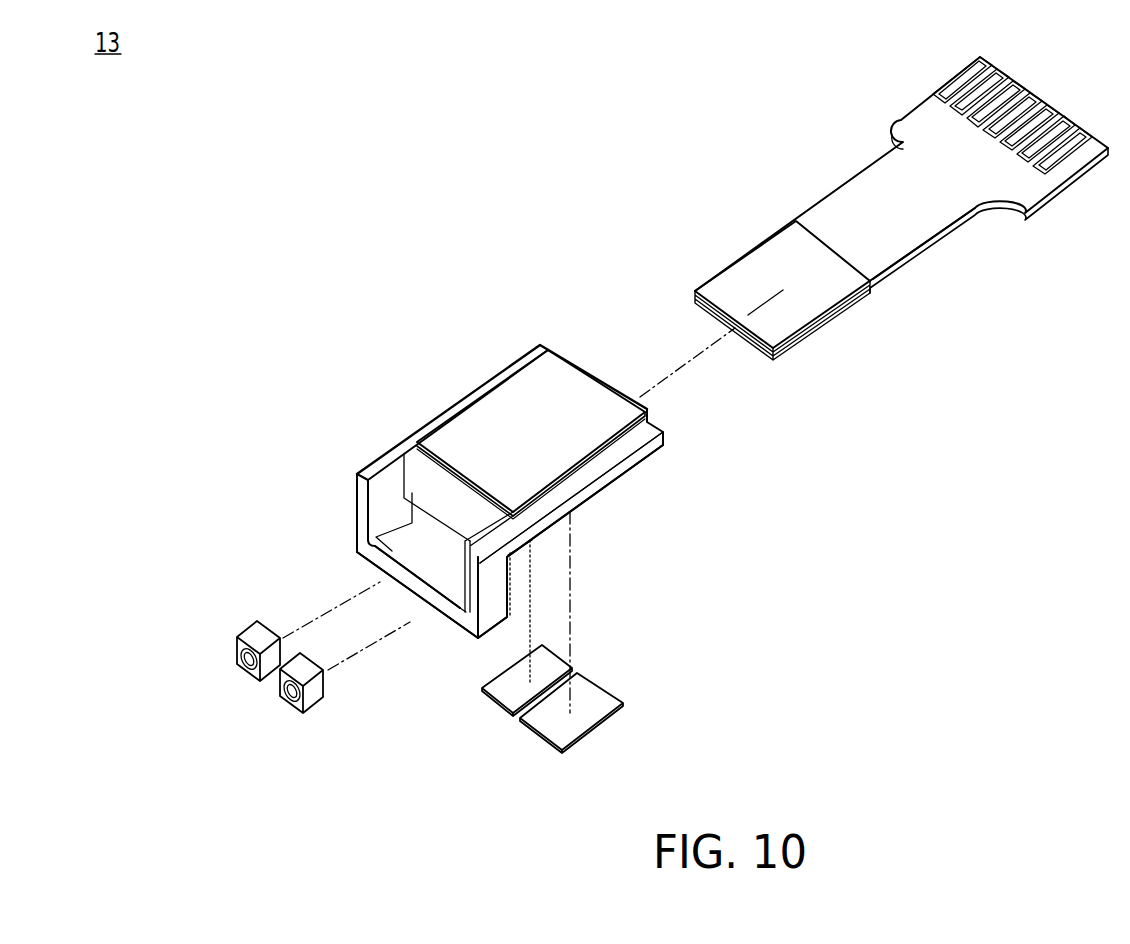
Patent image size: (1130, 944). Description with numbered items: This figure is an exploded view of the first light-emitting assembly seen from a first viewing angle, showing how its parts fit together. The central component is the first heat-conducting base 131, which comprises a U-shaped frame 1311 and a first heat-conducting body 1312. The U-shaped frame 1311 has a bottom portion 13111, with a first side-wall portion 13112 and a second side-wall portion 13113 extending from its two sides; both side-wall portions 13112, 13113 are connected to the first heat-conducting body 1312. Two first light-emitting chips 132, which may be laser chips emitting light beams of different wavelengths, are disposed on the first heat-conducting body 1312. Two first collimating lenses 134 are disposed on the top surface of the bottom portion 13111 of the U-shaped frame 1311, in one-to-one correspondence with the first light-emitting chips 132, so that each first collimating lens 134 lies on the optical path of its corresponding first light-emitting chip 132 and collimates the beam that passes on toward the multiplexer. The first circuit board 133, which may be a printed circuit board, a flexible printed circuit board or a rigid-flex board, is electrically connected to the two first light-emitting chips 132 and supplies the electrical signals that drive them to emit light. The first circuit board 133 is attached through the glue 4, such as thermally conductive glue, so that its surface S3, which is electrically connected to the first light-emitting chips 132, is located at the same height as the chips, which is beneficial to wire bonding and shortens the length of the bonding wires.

The first heat-conducting base 131 is at (383, 331).
The U-shaped frame 1311 is at (350, 444).
The first heat-conducting body 1312 is at (503, 402).
The bottom portion 13111 is at (408, 583).
The first side-wall portion 13112 is at (356, 512).
The second side-wall portion 13113 is at (497, 590).
The first light-emitting chip 132 is at (512, 697).
The first circuit board 133 is at (882, 200).
The first collimating lens 134 is at (260, 633).
The glue 4 is at (768, 268).
The surface of the first circuit board S3 is at (899, 277).